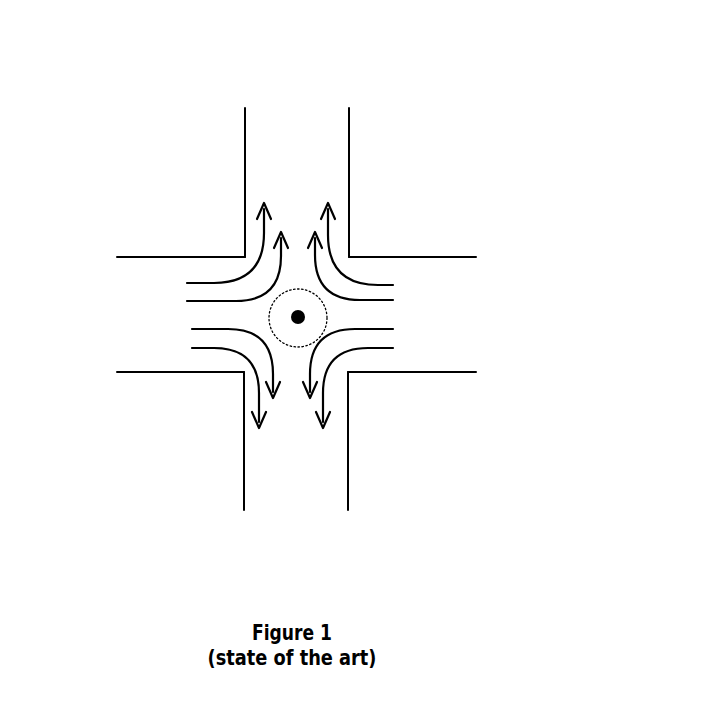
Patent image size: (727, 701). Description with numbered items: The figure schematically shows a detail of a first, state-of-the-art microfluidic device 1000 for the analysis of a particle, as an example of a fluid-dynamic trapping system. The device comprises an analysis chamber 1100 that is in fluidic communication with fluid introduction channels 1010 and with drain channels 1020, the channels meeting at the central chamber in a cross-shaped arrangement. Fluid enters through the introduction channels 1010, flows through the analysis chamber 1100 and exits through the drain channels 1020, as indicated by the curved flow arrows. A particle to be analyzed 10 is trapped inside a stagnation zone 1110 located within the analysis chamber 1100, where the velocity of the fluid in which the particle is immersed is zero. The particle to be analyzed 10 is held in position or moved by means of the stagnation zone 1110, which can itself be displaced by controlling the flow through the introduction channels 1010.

The intersection (state of the art) 1000 is at (522, 41).
The fluid introduction channels 1010 is at (127, 247).
The drain channels 1020 is at (338, 142).
The analysis chamber 1100 is at (338, 317).
The stagnation zone 1110 is at (278, 340).
The particle to be analyzed 10 is at (302, 321).